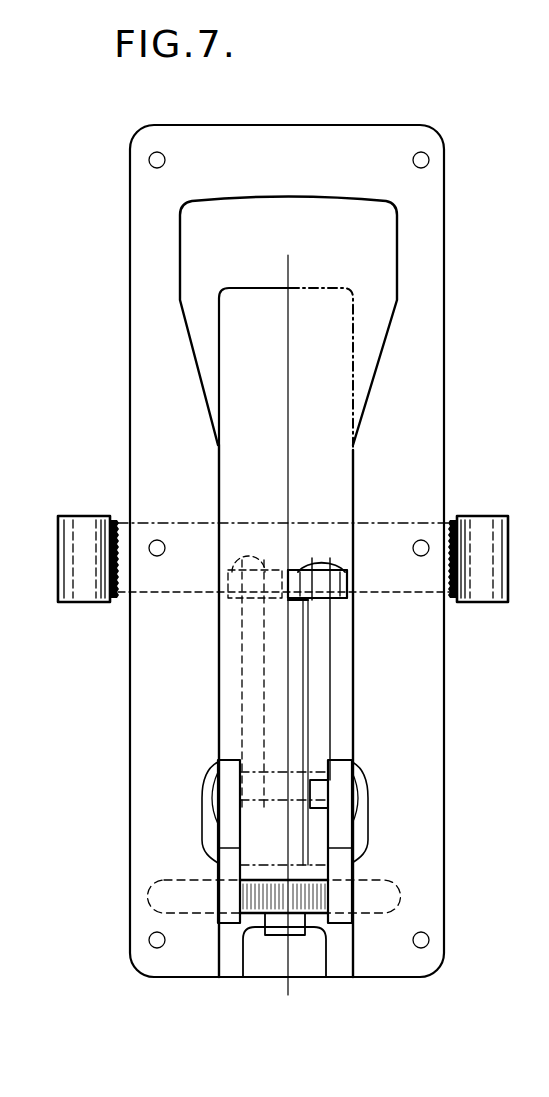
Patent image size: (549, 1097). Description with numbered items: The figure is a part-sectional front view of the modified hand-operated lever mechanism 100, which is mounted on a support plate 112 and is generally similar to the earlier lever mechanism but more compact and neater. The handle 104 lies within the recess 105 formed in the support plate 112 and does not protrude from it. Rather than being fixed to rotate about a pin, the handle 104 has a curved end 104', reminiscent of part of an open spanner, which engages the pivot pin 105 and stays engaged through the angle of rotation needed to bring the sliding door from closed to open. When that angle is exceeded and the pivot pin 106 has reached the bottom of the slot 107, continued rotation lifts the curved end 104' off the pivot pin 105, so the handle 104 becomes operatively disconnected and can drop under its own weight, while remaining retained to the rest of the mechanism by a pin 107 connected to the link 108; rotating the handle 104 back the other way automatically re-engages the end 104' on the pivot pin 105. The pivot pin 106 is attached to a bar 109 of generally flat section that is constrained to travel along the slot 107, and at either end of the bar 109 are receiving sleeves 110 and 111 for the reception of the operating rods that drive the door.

The hand-operated lever mechanism 100 is at (119, 713).
The handle 104 is at (286, 611).
The curved end 104' is at (271, 878).
The pivot pin 105 is at (272, 895).
The pivot pin 106 is at (310, 598).
The slot 107 is at (310, 787).
The link 108 is at (243, 675).
The bar 109 is at (302, 545).
The receiving sleeve 110 is at (88, 525).
The right knob 111 is at (485, 525).
The support plate 112 is at (146, 196).